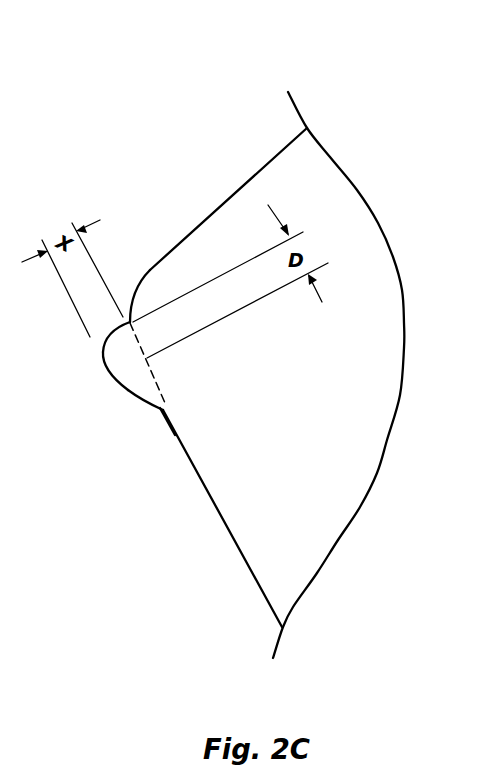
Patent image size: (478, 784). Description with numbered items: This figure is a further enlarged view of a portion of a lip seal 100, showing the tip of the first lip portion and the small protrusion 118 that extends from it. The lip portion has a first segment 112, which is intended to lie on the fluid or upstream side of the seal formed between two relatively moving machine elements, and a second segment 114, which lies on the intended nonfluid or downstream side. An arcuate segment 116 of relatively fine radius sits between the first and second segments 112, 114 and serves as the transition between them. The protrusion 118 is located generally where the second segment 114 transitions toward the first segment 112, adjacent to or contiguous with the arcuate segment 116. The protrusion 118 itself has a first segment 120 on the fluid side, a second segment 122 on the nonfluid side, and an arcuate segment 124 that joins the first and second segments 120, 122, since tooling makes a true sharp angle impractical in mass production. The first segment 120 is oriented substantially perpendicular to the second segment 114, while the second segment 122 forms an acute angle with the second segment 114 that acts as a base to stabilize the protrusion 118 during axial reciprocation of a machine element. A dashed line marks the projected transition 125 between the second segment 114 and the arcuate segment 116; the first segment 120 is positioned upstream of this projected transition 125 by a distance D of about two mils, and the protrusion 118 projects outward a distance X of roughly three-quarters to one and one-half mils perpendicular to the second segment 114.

The hollow object / ceramic article 100 is at (280, 152).
The first segment 112 is at (248, 178).
The second segment 114 is at (233, 540).
The arcuate segment 116 is at (137, 287).
The protrusion 118 is at (122, 387).
The first segment of protrusion 120 is at (104, 337).
The second segment of protrusion 122 is at (152, 405).
The arcuate segment of protrusion 124 is at (106, 369).
The projected transition 125 is at (162, 364).